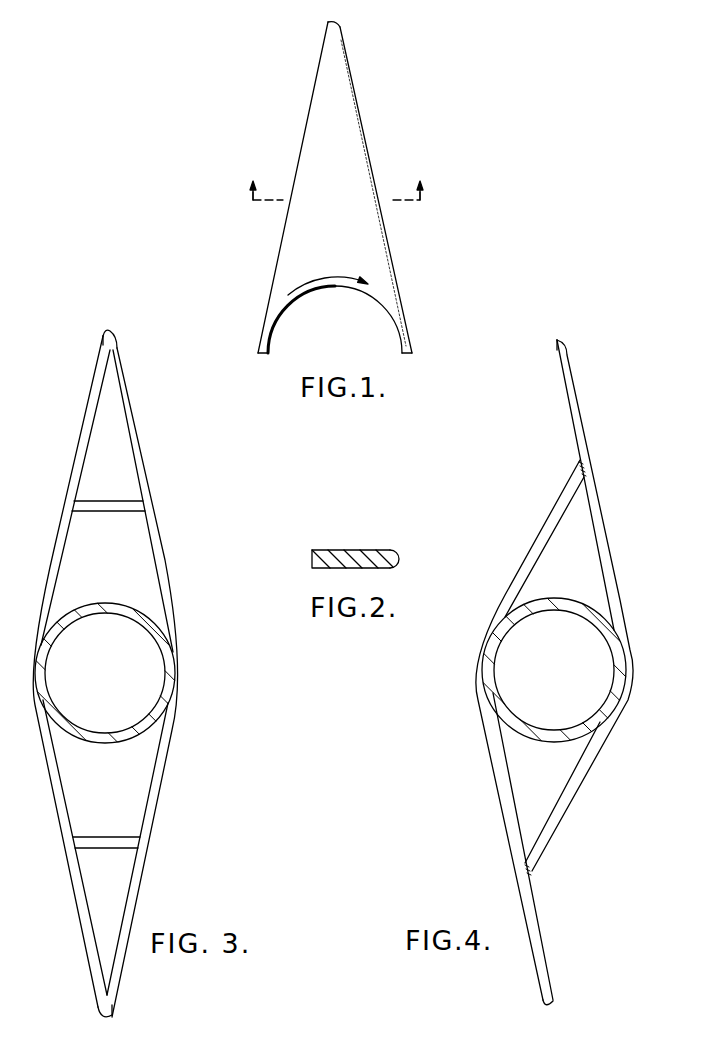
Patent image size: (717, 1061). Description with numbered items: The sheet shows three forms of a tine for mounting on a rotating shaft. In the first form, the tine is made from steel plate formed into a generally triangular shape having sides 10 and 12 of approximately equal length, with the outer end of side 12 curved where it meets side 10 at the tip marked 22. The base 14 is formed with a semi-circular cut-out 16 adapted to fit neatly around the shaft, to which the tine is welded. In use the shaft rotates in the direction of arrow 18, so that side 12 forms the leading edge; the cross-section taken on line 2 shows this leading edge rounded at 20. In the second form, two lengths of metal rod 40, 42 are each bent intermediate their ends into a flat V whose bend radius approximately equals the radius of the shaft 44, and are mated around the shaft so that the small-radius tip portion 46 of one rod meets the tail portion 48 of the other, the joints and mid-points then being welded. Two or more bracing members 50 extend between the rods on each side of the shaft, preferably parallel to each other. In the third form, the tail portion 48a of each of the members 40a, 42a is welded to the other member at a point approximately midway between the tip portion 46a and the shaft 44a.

In FIG. 1, the side 10 is at (302, 143).
In FIG. 2, the side 10 is at (312, 557).
In FIG. 1, the side 12 is at (365, 128).
In FIG. 2, the side 12 is at (399, 560).
In FIG. 1, the base 14 is at (263, 356).
In FIG. 1, the cut-out 16 is at (318, 291).
In FIG. 1, the arrow 18 is at (323, 289).
In FIG. 2, the rounded leading edge 20 is at (395, 552).
In FIG. 1, the pointed tip 22 is at (327, 22).
In FIG. 1, the section line 2- 2 is at (337, 194).
In FIG. 3, the length of metal rod 40 is at (158, 552).
In FIG. 3, the length of metal rod 42 is at (53, 551).
In FIG. 3, the shaft 44 is at (111, 606).
In FIG. 3, the tip portion 46 is at (115, 346).
In FIG. 3, the tail portion 48 is at (103, 352).
In FIG. 3, the bracing member 50 is at (118, 506).
In FIG. 4, the member 40a is at (602, 530).
In FIG. 4, the member 42a is at (498, 783).
In FIG. 4, the shaft 44a is at (554, 670).
In FIG. 4, the tip portion 46a is at (583, 327).
In FIG. 4, the tail portion 48a is at (578, 468).